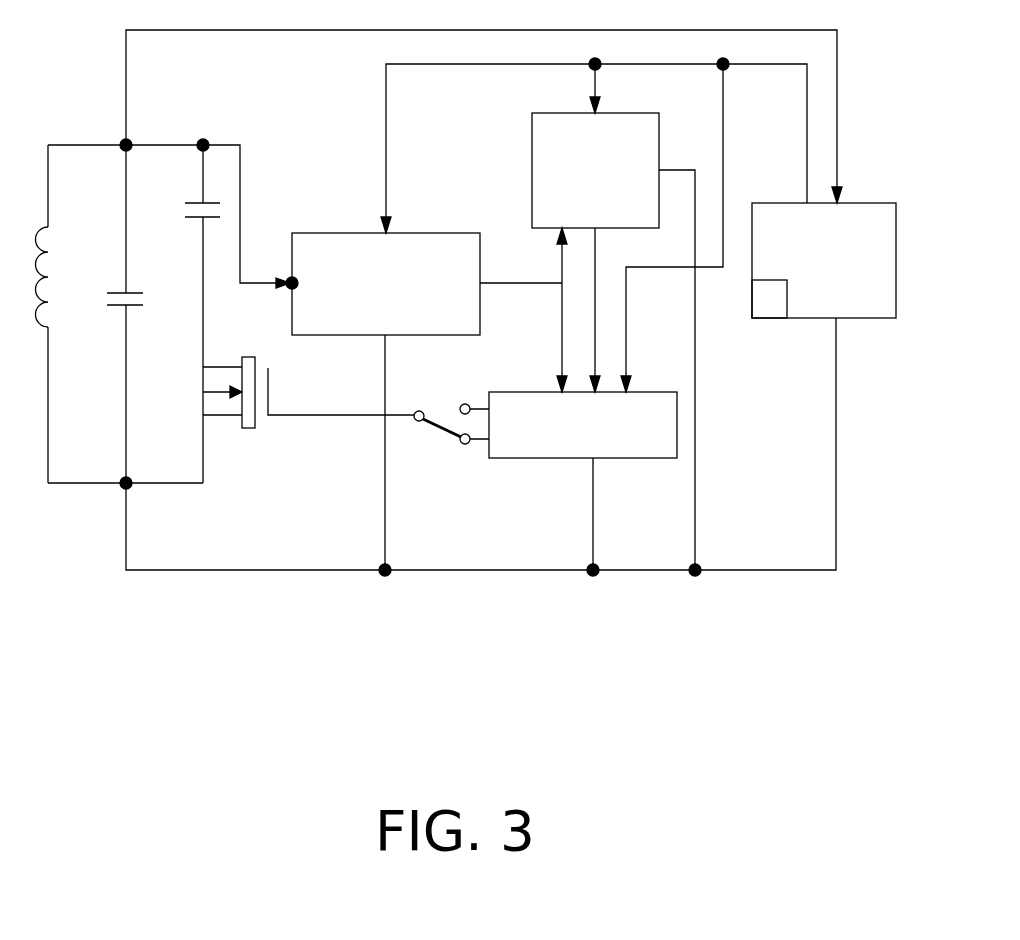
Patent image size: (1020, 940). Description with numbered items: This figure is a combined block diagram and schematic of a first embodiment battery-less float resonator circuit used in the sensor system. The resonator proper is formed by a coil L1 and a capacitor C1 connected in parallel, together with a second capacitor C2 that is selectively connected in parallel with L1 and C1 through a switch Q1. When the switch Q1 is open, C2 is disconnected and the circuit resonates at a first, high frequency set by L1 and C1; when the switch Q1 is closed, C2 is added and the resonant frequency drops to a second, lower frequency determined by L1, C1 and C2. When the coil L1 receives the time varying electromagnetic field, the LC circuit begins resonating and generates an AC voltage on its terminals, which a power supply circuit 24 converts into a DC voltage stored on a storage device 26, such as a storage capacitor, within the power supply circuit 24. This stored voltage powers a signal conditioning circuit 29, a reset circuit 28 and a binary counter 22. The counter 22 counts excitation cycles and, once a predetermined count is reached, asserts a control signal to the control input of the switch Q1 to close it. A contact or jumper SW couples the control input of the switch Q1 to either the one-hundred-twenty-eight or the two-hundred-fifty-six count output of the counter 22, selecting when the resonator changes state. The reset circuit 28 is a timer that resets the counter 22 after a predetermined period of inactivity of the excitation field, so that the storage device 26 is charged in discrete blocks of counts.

The counter 22 is at (630, 458).
The power supply circuit 24 is at (862, 320).
The storage device 26 is at (775, 305).
The reset circuit 28 is at (533, 172).
The signal conditioning circuit 29 is at (341, 232).
The coil L1 is at (58, 314).
The capacitor C1 is at (133, 318).
The capacitor C2 is at (191, 256).
The switch Q1 is at (308, 420).
The jumper SW is at (440, 430).